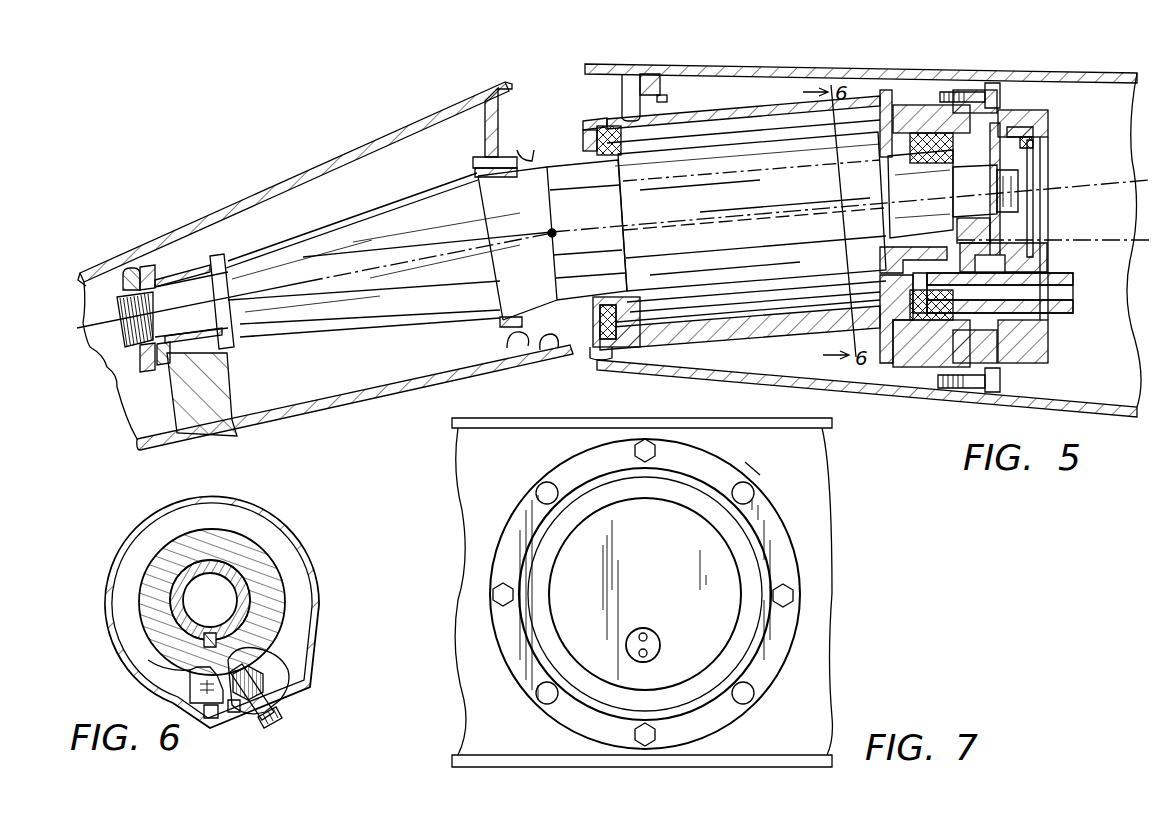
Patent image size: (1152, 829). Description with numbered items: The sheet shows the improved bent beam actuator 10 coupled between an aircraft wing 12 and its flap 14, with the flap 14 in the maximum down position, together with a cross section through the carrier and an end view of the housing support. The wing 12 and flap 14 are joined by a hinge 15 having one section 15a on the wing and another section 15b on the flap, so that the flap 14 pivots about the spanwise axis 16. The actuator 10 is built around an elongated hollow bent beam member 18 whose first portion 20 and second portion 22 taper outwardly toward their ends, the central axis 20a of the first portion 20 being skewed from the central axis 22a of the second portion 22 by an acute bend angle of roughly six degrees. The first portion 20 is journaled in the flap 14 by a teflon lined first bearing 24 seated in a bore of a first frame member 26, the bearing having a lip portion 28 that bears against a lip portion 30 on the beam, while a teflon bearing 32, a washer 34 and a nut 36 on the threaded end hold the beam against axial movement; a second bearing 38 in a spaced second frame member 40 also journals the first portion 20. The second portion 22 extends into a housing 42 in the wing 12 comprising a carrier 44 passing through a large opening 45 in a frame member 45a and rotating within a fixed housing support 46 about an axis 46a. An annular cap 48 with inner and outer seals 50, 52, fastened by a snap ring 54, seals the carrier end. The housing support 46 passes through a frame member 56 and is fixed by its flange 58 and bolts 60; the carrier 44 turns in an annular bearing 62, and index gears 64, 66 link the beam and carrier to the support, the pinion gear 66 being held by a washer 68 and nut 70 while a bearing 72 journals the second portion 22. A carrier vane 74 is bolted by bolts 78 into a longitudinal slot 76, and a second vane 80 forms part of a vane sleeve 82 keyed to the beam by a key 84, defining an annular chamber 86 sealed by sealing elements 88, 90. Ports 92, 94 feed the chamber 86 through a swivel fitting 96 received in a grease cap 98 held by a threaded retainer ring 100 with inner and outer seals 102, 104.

In FIG. 5, the actuator 10 is at (714, 62).
In FIG. 5, the aircraft wing 12 is at (814, 60).
In FIG. 7, the aircraft wing 12 is at (610, 418).
In FIG. 5, the flap 14 is at (323, 164).
In FIG. 5, the hinge 15 is at (566, 118).
In FIG. 5, the hinge section 15a is at (610, 119).
In FIG. 5, the hinge section 15b is at (540, 158).
In FIG. 5, the axis 16 is at (556, 238).
In FIG. 5, the bent beam member 18 is at (419, 196).
In FIG. 6, the bent beam member 18 is at (262, 612).
In FIG. 5, the first portion 20 is at (366, 214).
In FIG. 5, the central axis 20a is at (122, 322).
In FIG. 5, the second portion 22 is at (601, 207).
In FIG. 6, the second portion 22 is at (282, 590).
In FIG. 5, the central axis 22a is at (1110, 184).
In FIG. 5, the first bearing 24 is at (185, 270).
In FIG. 5, the first frame member 26 is at (218, 368).
In FIG. 5, the circumferential lip portion 28 is at (208, 256).
In FIG. 5, the circumferential lip portion 30 is at (232, 258).
In FIG. 5, the teflon bearing 32 is at (147, 266).
In FIG. 5, the washer 34 is at (180, 270).
In FIG. 5, the nut 36 is at (148, 373).
In FIG. 5, the second bearing 38 is at (498, 324).
In FIG. 5, the second frame member 40 is at (504, 349).
In FIG. 5, the housing 42 is at (780, 98).
In FIG. 5, the carrier 44 is at (772, 112).
In FIG. 6, the carrier 44 is at (283, 522).
In FIG. 5, the opening 45 is at (668, 99).
In FIG. 5, the frame member 45a is at (655, 74).
In FIG. 5, the housing support 46 is at (1060, 116).
In FIG. 7, the housing support 46 is at (760, 512).
In FIG. 5, the axis 46a is at (1118, 239).
In FIG. 5, the annular cap 48 is at (604, 148).
In FIG. 5, the inner seal 50 is at (620, 294).
In FIG. 5, the outer seal 52 is at (592, 350).
In FIG. 5, the snap ring 54 is at (590, 132).
In FIG. 5, the frame member 56 is at (948, 392).
In FIG. 7, the frame member 56 is at (487, 465).
In FIG. 5, the flange 58 is at (978, 82).
In FIG. 7, the flange 58 is at (766, 484).
In FIG. 5, the bolts 60 is at (996, 83).
In FIG. 7, the bolts 60 is at (545, 486).
In FIG. 5, the annular bearing 62 is at (930, 118).
In FIG. 5, the ring gear 64 is at (1000, 108).
In FIG. 5, the pinion gear 66 is at (992, 222).
In FIG. 5, the washer 68 is at (1004, 205).
In FIG. 5, the nut 70 is at (1022, 192).
In FIG. 5, the bearing 72 is at (882, 123).
In FIG. 6, the carrier vane 74 is at (282, 668).
In FIG. 6, the longitudinal slot 76 is at (272, 704).
In FIG. 6, the bolts 78 is at (272, 724).
In FIG. 5, the second vane 80 is at (782, 300).
In FIG. 6, the second vane 80 is at (190, 695).
In FIG. 5, the vane sleeve 82 is at (714, 201).
In FIG. 6, the vane sleeve 82 is at (142, 562).
In FIG. 6, the key 84 is at (213, 626).
In FIG. 5, the annular chamber 86 is at (756, 144).
In FIG. 6, the annular chamber 86 is at (176, 518).
In FIG. 6, the sealing element 88 is at (222, 640).
In FIG. 6, the sealing element 90 is at (213, 720).
In FIG. 5, the port 92 is at (898, 275).
In FIG. 6, the port 92 is at (266, 686).
In FIG. 6, the port 94 is at (240, 716).
In FIG. 5, the swivel fitting 96 is at (1076, 294).
In FIG. 7, the swivel fitting 96 is at (660, 640).
In FIG. 5, the grease cap 98 is at (1040, 244).
In FIG. 7, the grease cap 98 is at (654, 564).
In FIG. 5, the threaded retainer ring 100 is at (1052, 143).
In FIG. 7, the threaded retainer ring 100 is at (708, 522).
In FIG. 5, the inner annular seal 102 is at (1040, 260).
In FIG. 5, the outer annular seal 104 is at (1052, 127).